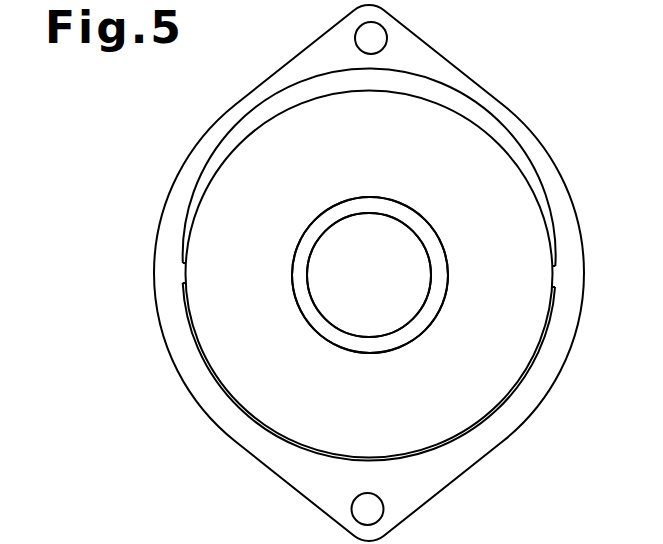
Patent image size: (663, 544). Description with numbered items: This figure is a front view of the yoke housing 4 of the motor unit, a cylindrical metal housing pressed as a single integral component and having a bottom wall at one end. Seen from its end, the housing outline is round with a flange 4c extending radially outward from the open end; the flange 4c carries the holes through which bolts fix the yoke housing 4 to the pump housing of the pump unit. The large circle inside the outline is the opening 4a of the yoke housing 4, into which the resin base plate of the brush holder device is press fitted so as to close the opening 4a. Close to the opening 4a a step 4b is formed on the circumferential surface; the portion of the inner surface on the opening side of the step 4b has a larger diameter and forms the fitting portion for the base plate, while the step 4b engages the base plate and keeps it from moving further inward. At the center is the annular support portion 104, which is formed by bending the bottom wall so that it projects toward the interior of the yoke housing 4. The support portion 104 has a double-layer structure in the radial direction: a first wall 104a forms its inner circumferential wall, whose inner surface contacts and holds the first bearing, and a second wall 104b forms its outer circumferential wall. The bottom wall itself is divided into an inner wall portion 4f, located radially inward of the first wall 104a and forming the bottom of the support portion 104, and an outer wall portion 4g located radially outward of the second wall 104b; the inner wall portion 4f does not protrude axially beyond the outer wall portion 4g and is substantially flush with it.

The yoke housing 4 is at (265, 82).
The opening 4a is at (539, 212).
The step 4b is at (555, 325).
The flange 4c is at (428, 58).
The inner wall portion 4f is at (402, 238).
The outer wall portion 4g is at (517, 365).
The support portion 104 is at (358, 206).
The first wall 104a is at (425, 255).
The second wall 104b is at (363, 355).